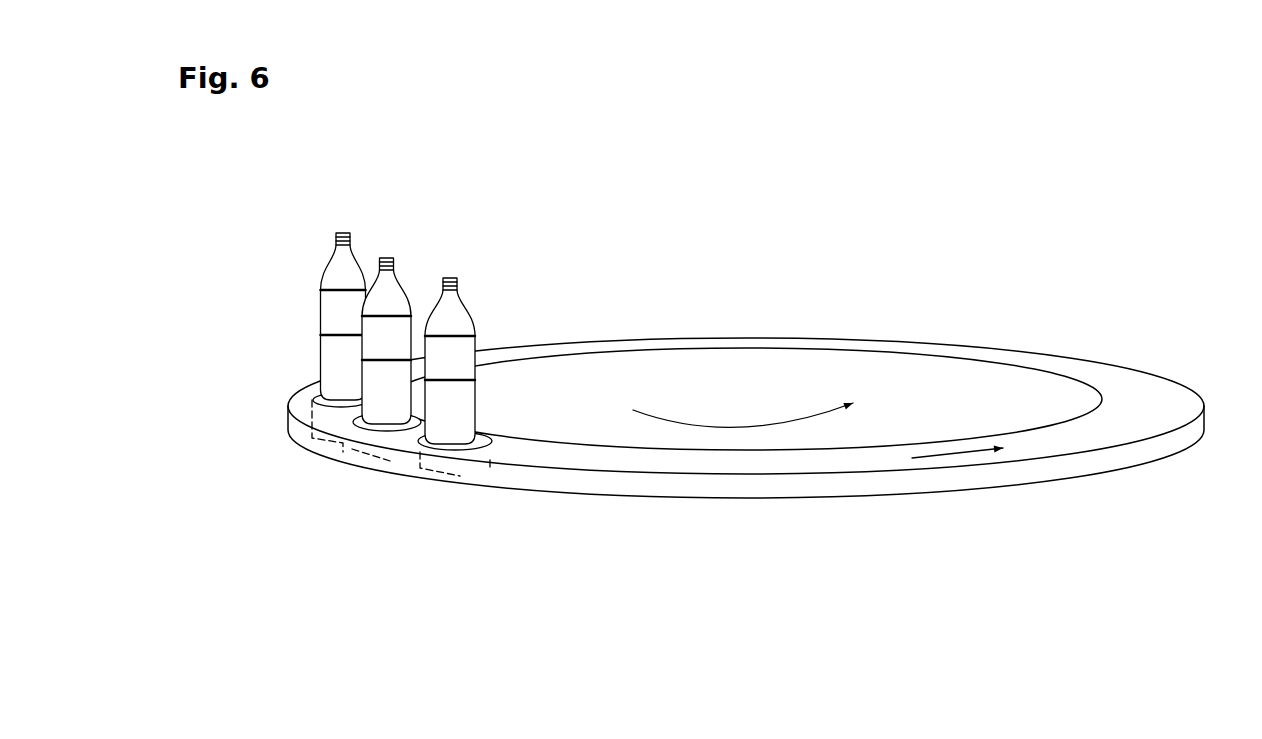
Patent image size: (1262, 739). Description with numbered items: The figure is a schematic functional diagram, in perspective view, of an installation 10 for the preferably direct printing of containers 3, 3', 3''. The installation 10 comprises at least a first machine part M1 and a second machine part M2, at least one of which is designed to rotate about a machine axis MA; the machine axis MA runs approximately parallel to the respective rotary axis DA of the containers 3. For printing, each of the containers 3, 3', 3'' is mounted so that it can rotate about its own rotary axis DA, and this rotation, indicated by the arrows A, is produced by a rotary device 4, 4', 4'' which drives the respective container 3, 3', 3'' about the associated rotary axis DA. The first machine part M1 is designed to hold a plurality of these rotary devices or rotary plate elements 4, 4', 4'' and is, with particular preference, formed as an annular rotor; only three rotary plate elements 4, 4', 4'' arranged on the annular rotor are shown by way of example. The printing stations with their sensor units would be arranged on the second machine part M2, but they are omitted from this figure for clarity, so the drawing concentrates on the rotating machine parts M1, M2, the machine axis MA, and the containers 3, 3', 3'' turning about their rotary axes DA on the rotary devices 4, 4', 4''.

The container 3 is at (301, 316).
The container 3' is at (314, 341).
The container 3'' is at (489, 349).
The rotary device 4 is at (308, 474).
The rotary device 4' is at (392, 519).
The rotary device 4'' is at (502, 512).
The installation 10 is at (656, 538).
The container rotation direction A is at (368, 225).
The rotary axis DA is at (346, 127).
The machine axis MA is at (747, 670).
The first machine part M1 is at (992, 383).
The second machine part M2 is at (1082, 440).